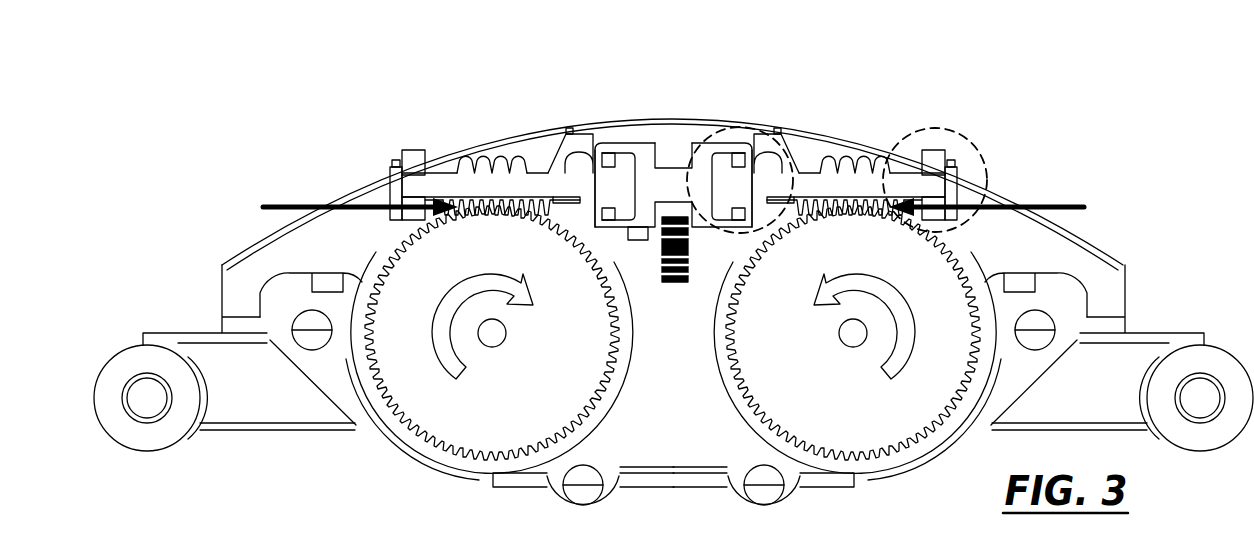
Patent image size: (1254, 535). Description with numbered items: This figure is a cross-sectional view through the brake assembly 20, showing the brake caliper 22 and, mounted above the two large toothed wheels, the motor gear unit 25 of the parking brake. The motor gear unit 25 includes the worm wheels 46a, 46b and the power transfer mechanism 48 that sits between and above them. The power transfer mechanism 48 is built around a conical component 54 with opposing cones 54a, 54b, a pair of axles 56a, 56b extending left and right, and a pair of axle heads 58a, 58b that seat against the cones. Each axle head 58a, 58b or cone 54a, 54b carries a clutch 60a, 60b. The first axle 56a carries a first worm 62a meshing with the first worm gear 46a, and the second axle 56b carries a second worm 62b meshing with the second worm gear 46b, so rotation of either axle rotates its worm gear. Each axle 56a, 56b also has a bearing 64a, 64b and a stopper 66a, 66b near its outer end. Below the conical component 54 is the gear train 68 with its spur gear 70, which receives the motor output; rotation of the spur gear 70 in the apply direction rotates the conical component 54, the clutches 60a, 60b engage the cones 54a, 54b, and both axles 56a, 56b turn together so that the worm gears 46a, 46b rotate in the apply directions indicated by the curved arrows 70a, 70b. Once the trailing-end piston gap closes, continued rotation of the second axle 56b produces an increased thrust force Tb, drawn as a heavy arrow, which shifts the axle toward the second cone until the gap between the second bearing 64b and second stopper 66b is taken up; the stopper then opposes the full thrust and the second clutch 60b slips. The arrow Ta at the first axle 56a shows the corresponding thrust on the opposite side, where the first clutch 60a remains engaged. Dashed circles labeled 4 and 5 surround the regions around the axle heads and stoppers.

The brake assembly 20 is at (673, 257).
The brake caliper 22 is at (1134, 291).
The motor gear unit 25 is at (483, 59).
The first worm gear 46a is at (477, 401).
The second worm gear 46b is at (838, 401).
The power transfer mechanism 48 is at (672, 155).
The conical component 54 is at (656, 135).
The first cone 54a is at (643, 183).
The second cone 54b is at (705, 183).
The first axle 56a is at (442, 187).
The second axle 56b is at (903, 187).
The first axle head 58a is at (622, 172).
The second axle head 58b is at (724, 172).
The first clutch 60a is at (607, 156).
The second clutch 60b is at (740, 156).
The first worm 62a is at (497, 167).
The second worm 62b is at (836, 167).
The first bearing 64a is at (410, 165).
The second bearing 64b is at (937, 162).
The first stopper 66a is at (395, 197).
The second stopper 66b is at (955, 175).
The gear train 68 is at (673, 293).
The spur gear 70 is at (639, 243).
The apply direction of first worm gear 70a is at (474, 280).
The apply direction of second worm gear 70b is at (845, 280).
The detail region of FIG. 4 is at (752, 231).
The detail region of FIG. 5 is at (935, 177).
The first force direction Ta is at (292, 204).
The thrust force Tb is at (1045, 204).